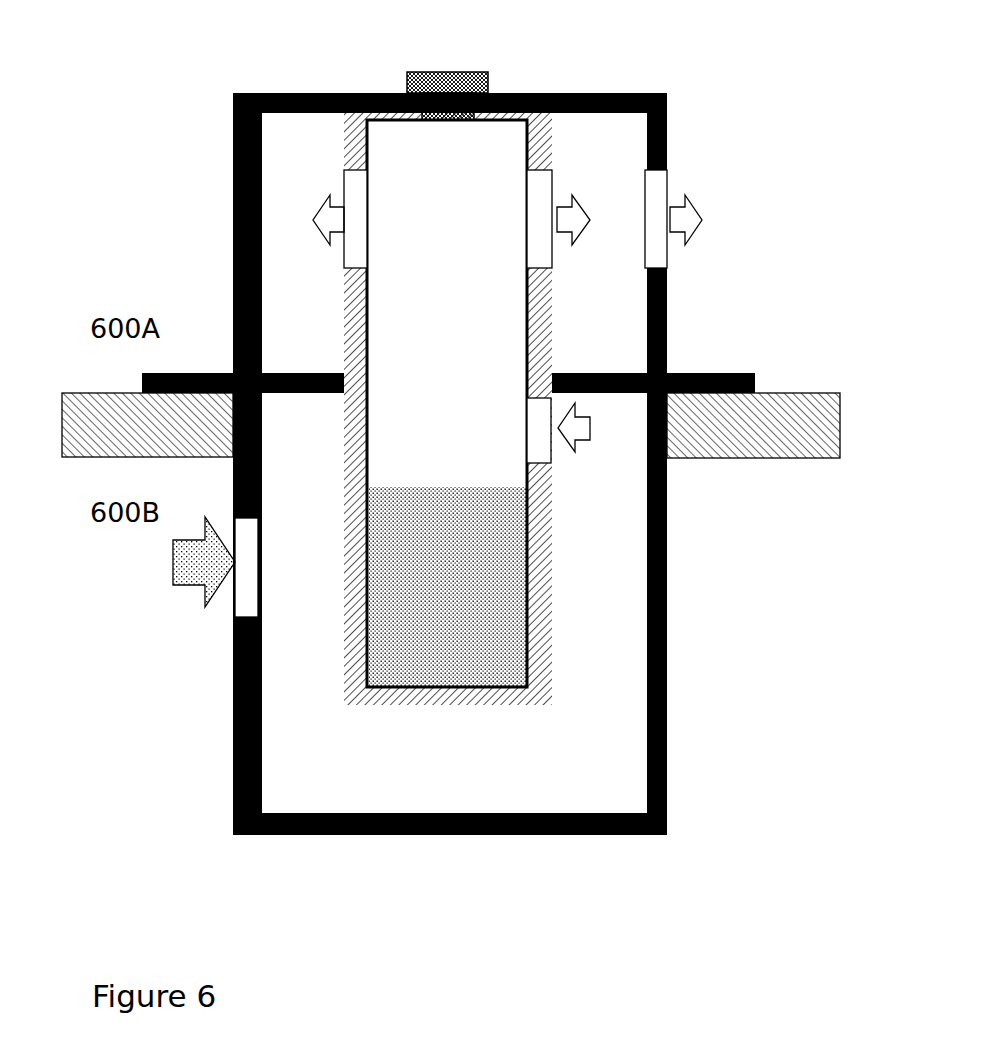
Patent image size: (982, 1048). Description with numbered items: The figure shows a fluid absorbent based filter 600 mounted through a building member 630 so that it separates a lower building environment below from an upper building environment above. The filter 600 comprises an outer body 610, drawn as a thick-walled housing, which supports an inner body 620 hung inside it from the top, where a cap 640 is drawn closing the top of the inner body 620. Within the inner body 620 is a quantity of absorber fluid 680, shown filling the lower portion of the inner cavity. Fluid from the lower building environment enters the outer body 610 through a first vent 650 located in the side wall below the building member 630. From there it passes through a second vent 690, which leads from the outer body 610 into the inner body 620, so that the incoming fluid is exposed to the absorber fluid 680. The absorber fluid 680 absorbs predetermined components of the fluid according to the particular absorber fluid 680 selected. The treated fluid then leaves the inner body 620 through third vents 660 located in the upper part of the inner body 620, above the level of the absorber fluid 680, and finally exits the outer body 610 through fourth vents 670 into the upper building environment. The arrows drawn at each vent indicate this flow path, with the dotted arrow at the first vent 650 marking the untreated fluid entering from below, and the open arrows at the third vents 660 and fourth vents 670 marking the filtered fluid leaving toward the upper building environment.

The fluid absorbent based filter 600 is at (614, 872).
The outer body 610 is at (667, 800).
The inner body 620 is at (542, 663).
The building member 630 is at (767, 437).
The cap 640 is at (500, 77).
The first vent 650 is at (245, 593).
The third vents 660 is at (360, 200).
The fourth vents 670 is at (655, 197).
The absorber fluid 680 is at (417, 638).
The second vent 690 is at (558, 455).